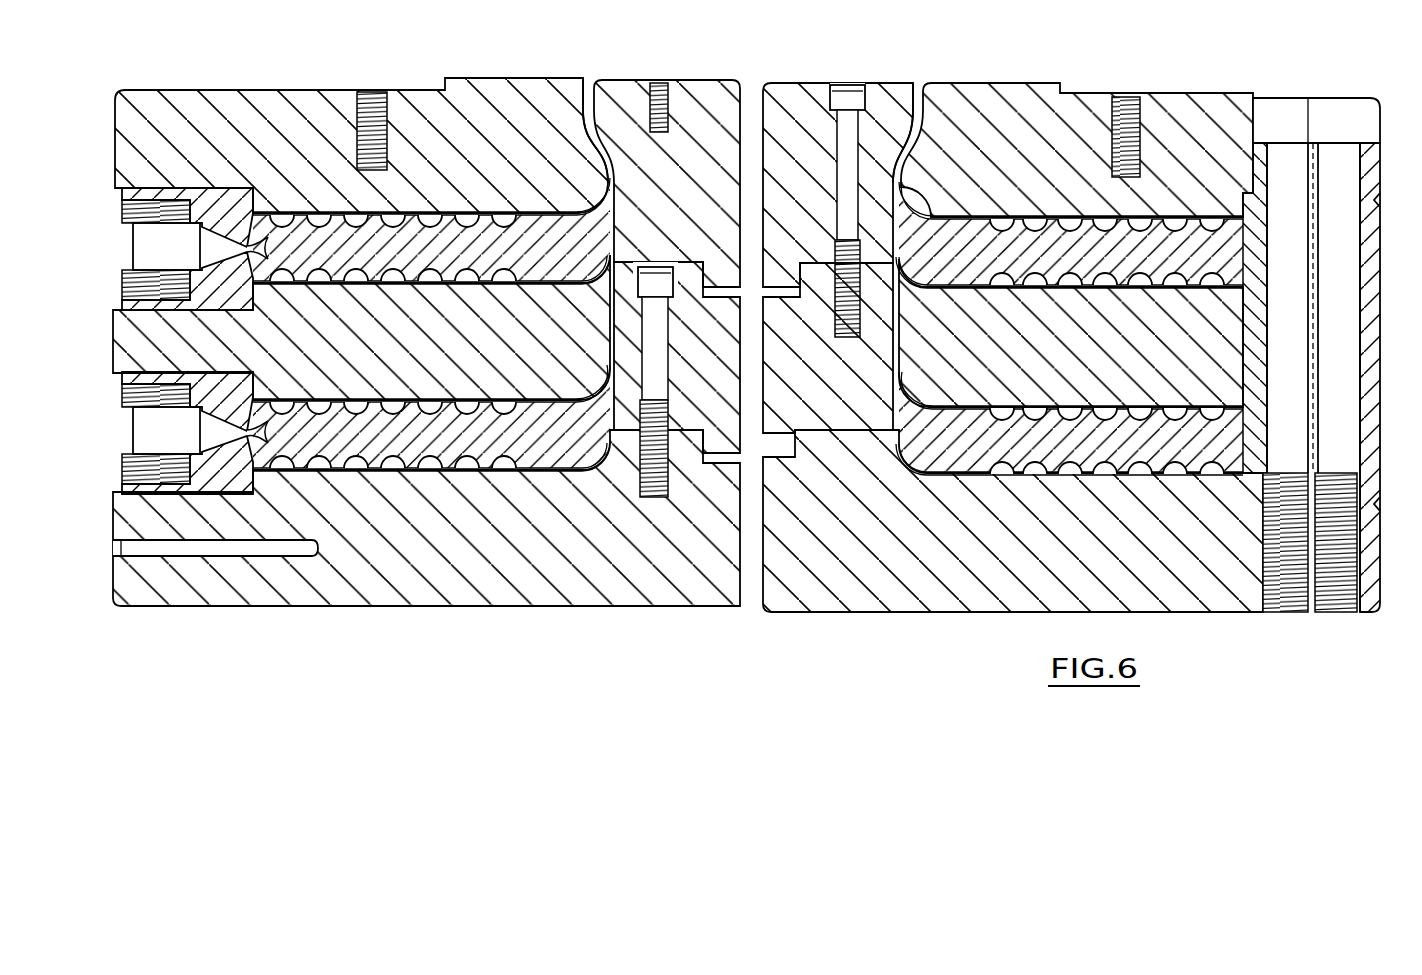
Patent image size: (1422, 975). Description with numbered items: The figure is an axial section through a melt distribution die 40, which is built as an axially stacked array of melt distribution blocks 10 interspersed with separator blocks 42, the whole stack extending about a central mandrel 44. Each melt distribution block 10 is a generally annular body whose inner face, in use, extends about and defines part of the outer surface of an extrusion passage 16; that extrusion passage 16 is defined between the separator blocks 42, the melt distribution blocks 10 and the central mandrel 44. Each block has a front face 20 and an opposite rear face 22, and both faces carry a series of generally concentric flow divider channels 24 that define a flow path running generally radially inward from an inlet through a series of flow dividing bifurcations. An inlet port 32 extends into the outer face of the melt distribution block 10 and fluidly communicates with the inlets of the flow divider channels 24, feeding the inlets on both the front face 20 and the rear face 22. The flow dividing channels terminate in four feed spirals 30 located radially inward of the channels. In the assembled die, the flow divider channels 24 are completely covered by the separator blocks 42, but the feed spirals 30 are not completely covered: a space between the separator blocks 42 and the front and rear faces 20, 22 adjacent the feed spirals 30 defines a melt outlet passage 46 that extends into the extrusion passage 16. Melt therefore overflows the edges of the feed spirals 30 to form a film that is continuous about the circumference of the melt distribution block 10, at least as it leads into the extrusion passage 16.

The melt distribution block 10 is at (1381, 250).
The extrusion passage 16 is at (614, 244).
The front face 20 is at (945, 216).
The rear face 22 is at (960, 288).
The flow divider channels 24 is at (320, 212).
The feed spirals 30 is at (468, 400).
The inlet port 32 is at (128, 240).
The melt distribution die 40 is at (266, 624).
The separator blocks 42 is at (1027, 150).
The central mandrel 44 is at (790, 96).
The melt outlet passage 46 is at (517, 212).